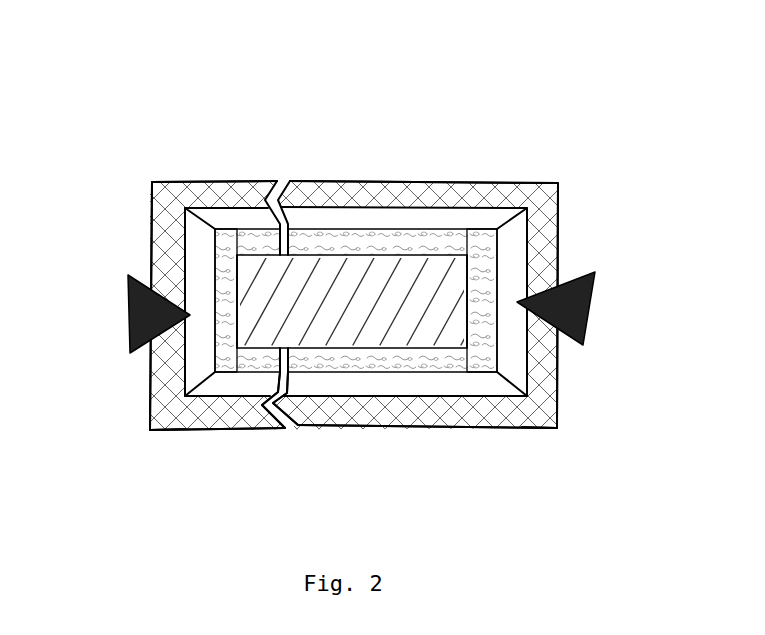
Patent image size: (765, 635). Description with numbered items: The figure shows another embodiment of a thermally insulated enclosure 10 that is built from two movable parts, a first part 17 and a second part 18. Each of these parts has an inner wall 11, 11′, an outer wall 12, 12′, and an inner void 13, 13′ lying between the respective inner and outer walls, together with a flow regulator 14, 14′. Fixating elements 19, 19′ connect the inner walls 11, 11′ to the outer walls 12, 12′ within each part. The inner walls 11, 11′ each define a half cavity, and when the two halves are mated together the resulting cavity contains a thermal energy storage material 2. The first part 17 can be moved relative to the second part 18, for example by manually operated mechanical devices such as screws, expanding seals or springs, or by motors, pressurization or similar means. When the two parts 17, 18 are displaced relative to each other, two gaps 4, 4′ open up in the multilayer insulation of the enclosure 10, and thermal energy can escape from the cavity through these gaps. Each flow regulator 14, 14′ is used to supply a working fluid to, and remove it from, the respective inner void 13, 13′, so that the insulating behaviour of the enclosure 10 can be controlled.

The thermally insulated enclosure 10 is at (401, 121).
The outer wall 12 is at (548, 197).
The outer wall 12′ is at (170, 198).
The gap 4 is at (283, 178).
The gap 4′ is at (290, 429).
The inner void 13 is at (515, 265).
The inner void 13′ is at (205, 280).
The fixating element 19 is at (513, 223).
The fixating element 19′ is at (213, 230).
The inner wall 11 is at (483, 332).
The inner wall 11′ is at (220, 327).
The thermal energy storage material 2 is at (335, 327).
The flow regulator 14 is at (580, 312).
The flow regulator 14′ is at (148, 317).
The first part 17 is at (150, 427).
The second part 18 is at (557, 427).